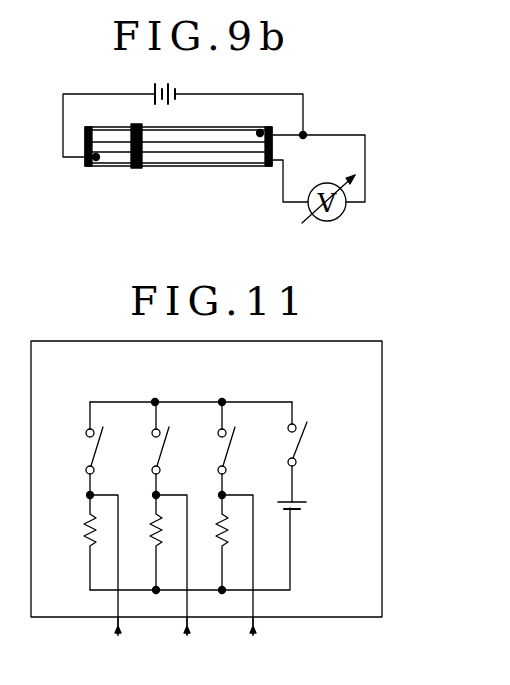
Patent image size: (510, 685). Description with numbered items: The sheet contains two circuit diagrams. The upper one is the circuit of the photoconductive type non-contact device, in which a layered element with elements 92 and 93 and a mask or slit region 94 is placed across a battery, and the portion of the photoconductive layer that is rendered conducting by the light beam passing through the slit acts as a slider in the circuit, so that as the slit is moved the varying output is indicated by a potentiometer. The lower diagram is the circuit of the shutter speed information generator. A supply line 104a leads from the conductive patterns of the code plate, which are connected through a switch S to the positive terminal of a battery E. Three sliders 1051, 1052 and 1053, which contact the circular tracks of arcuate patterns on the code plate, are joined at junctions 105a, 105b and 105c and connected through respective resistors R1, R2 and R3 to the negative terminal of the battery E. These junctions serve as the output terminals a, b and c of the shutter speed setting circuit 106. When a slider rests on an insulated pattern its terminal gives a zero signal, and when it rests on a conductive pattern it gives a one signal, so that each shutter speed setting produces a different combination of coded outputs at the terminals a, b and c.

In FIG. 9B, the electrode 92 is at (85, 133).
In FIG. 9B, the electrode 93 is at (85, 147).
In FIG. 9B, the partition 94 is at (107, 160).
In FIG. 11, the supply line 104a is at (237, 402).
In FIG. 11, the slider 1051 is at (97, 445).
In FIG. 11, the slider 1052 is at (163, 445).
In FIG. 11, the slider 1053 is at (229, 445).
In FIG. 11, the junction 105a is at (90, 488).
In FIG. 11, the junction 105b is at (156, 488).
In FIG. 11, the junction 105c is at (222, 488).
In FIG. 11, the shutter speed setting circuit 106 is at (337, 617).
In FIG. 11, the resistor R1 is at (79, 542).
In FIG. 11, the resistor R2 is at (145, 542).
In FIG. 11, the resistor R3 is at (211, 542).
In FIG. 11, the switch S is at (301, 452).
In FIG. 11, the battery E is at (300, 508).
In FIG. 11, the output terminal a is at (118, 643).
In FIG. 11, the output terminal b is at (187, 643).
In FIG. 11, the output terminal c is at (253, 643).